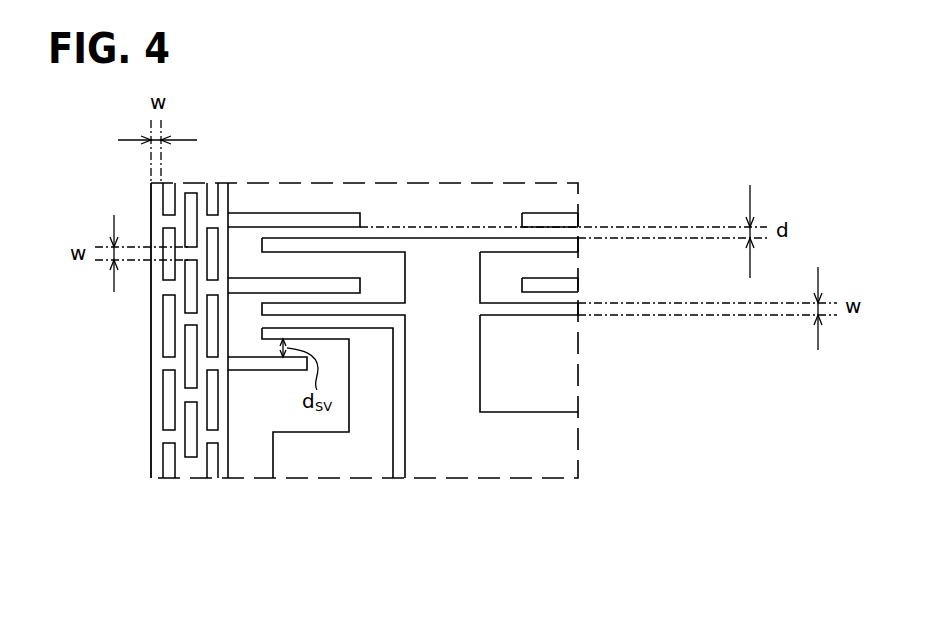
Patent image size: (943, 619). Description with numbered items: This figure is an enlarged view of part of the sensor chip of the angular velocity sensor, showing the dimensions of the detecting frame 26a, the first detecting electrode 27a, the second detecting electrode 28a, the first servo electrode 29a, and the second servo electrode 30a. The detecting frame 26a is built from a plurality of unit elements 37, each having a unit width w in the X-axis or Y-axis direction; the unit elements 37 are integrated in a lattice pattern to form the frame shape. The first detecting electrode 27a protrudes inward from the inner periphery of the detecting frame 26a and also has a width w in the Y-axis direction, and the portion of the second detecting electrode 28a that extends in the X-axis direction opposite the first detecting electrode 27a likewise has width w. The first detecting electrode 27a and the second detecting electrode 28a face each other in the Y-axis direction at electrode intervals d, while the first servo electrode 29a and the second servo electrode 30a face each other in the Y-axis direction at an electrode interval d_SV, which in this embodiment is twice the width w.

The detecting frame 26a is at (147, 461).
The first detecting electrode 27a is at (295, 222).
The second detecting electrode 28a is at (453, 473).
The first servo electrode 29a is at (258, 370).
The second servo electrode 30a is at (256, 327).
The unit elements 37 is at (182, 407).